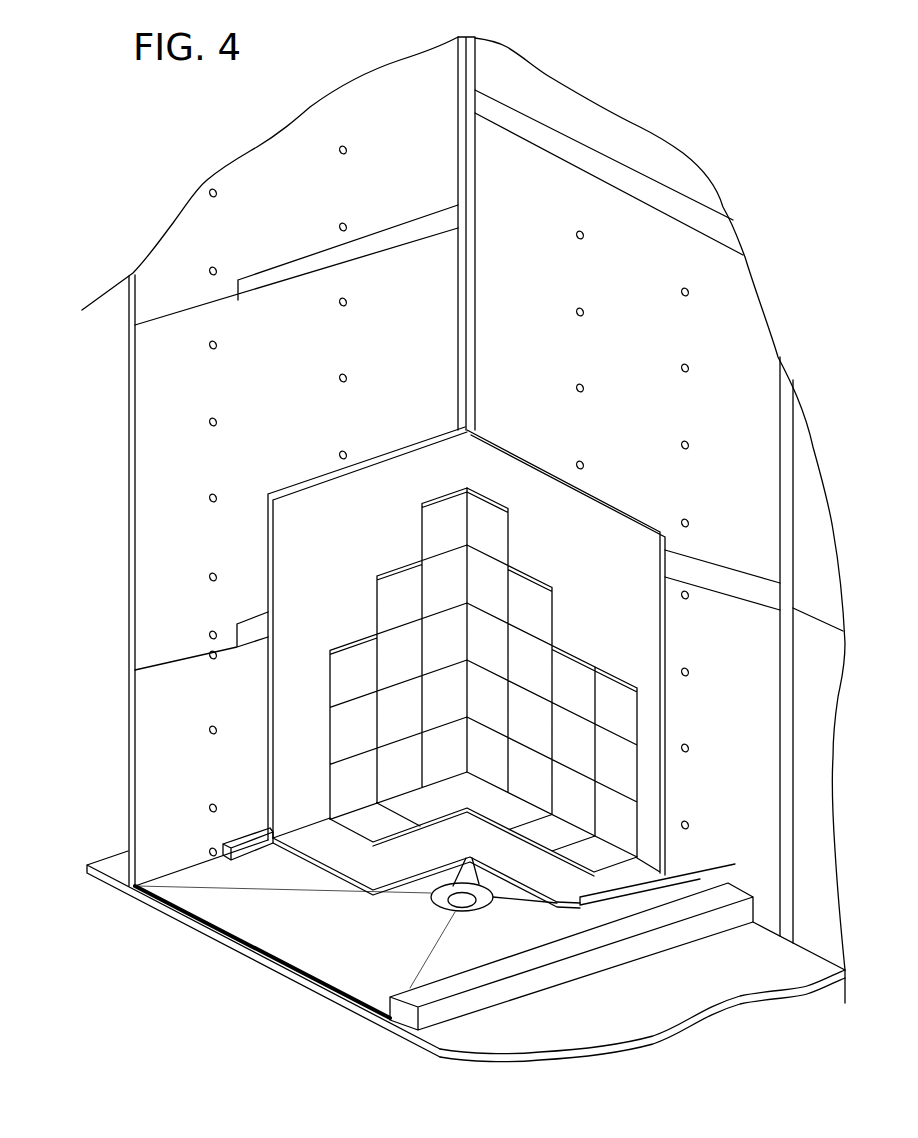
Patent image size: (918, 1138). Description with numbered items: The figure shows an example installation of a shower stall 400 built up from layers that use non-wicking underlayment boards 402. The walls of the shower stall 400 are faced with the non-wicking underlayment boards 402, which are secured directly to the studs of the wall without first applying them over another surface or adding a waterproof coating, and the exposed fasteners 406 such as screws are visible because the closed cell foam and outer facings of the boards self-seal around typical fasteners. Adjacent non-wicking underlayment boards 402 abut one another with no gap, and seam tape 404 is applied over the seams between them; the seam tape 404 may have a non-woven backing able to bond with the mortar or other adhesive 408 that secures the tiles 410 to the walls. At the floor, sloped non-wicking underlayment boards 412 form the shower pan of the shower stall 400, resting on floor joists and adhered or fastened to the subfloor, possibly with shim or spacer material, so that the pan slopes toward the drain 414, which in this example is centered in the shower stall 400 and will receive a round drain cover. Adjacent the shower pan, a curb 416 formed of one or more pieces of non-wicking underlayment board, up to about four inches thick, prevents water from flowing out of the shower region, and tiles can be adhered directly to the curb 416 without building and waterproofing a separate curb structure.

The shower stall 400 is at (687, 107).
The non-wicking underlayment board 402 is at (78, 137).
The seam tape 404 is at (642, 900).
The fastener 406 is at (213, 345).
The mortar or other adhesive 408 is at (315, 505).
The tile 410 is at (405, 594).
The non-wicking underlayment boards forming the shower pan 412 is at (305, 956).
The drain 414 is at (456, 899).
The curb 416 is at (577, 968).